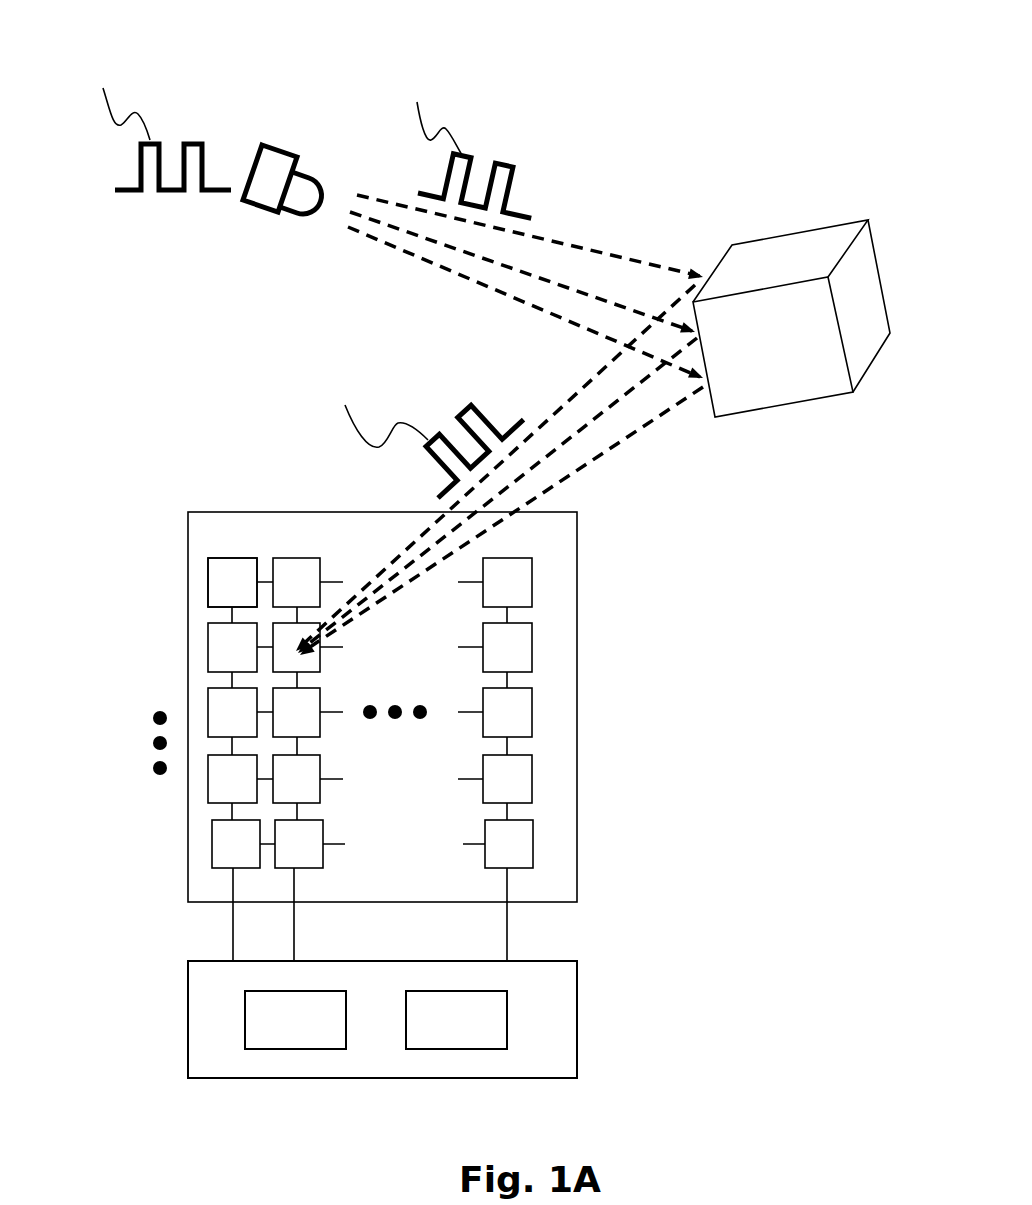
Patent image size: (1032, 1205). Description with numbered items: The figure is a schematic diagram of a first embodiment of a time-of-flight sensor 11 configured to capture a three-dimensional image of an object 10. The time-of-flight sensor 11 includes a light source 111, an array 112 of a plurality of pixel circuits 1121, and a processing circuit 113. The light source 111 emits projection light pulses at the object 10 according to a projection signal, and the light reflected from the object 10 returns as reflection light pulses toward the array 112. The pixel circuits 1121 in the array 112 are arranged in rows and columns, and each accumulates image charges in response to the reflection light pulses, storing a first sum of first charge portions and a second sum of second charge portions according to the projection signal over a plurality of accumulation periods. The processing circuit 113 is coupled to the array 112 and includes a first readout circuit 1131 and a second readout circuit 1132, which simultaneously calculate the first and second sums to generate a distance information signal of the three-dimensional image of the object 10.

The object 10 is at (812, 247).
The time-of-flight sensor 11 is at (673, 98).
The light source 111 is at (270, 143).
The array 112 is at (243, 540).
The pixel circuit 1121 is at (208, 582).
The processing circuit 113 is at (233, 990).
The first readout circuit 1131 is at (320, 1034).
The second readout circuit 1132 is at (484, 1034).